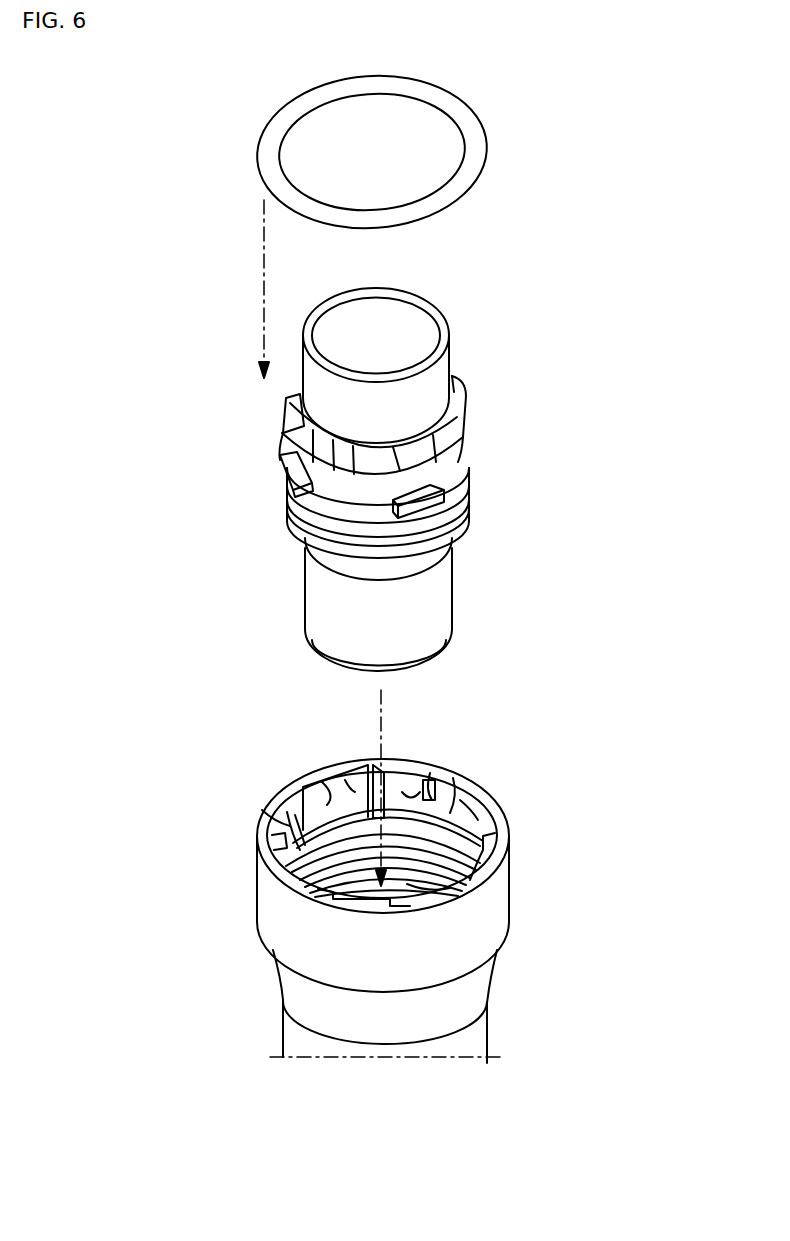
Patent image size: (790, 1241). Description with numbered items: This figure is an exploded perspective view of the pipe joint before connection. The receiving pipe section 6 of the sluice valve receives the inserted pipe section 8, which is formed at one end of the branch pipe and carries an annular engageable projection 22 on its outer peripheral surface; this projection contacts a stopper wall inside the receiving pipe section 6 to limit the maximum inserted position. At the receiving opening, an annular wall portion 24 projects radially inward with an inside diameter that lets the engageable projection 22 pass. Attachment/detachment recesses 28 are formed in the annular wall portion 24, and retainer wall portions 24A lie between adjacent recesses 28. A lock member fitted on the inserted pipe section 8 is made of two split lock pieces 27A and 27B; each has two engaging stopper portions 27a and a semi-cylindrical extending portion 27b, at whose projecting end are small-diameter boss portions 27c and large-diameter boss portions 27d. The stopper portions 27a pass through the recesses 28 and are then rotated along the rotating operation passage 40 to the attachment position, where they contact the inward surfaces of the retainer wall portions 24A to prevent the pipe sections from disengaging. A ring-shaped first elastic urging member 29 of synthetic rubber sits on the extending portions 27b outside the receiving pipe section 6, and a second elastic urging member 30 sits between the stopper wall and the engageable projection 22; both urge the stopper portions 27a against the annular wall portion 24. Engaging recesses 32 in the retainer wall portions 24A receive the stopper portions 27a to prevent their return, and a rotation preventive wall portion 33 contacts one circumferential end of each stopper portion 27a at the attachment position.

The receiving pipe section 6 is at (488, 902).
The inserted pipe section 8 is at (320, 612).
The engageable projection 22 is at (412, 548).
The annular wall portion 24 is at (501, 831).
The retainer wall portion 24A is at (275, 810).
The split lock piece 27A is at (465, 380).
The split lock piece 27B is at (283, 401).
The engaging stopper portion 27a is at (282, 485).
The extending portion 27b is at (277, 458).
The small-diameter boss portion 27c is at (307, 553).
The large-diameter boss portion 27d is at (277, 428).
The attachment/detachment recess 28 is at (313, 770).
The first elastic urging member 29 is at (477, 167).
The second elastic urging member 30 is at (462, 537).
The engaging recess 32 is at (423, 777).
The rotation preventive wall portion 33 is at (348, 787).
The rotating operation passage 40 is at (270, 815).